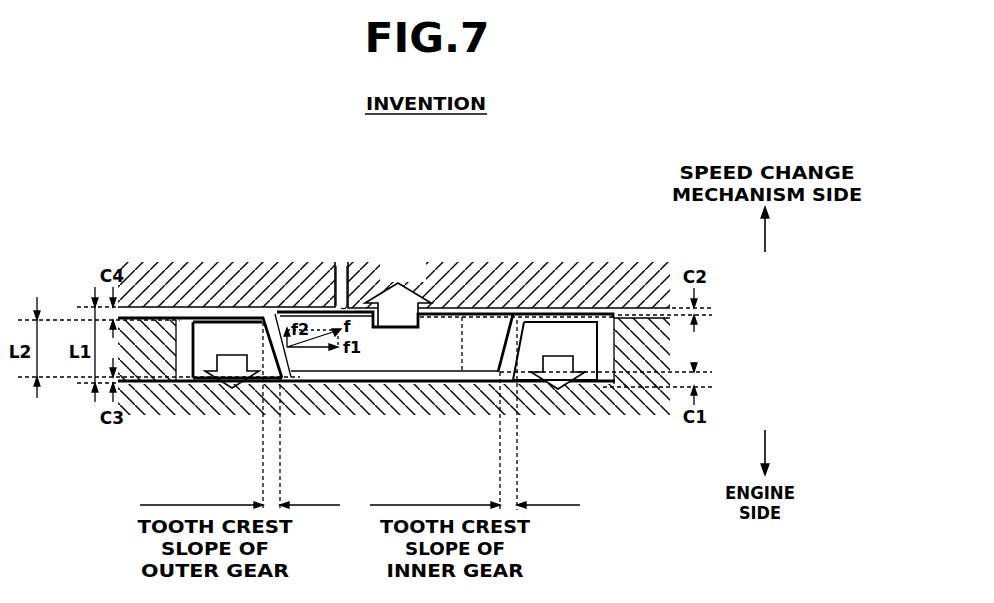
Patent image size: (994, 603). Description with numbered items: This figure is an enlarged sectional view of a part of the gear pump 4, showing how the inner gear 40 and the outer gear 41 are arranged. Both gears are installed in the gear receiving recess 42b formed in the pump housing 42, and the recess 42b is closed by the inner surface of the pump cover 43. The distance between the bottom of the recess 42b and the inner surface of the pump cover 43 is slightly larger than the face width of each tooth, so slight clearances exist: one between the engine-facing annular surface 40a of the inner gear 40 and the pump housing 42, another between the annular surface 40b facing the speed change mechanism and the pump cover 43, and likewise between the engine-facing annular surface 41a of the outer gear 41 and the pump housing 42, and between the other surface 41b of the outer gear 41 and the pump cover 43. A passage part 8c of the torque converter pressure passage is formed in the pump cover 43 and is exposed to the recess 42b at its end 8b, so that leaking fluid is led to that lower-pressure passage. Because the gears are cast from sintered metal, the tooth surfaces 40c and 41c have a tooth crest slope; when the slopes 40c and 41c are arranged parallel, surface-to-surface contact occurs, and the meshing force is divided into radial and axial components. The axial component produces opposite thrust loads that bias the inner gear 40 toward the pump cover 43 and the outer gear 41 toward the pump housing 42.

The gear pump 4 is at (622, 201).
The end of passage part 8b is at (350, 307).
The passage part 8c is at (334, 268).
The inner gear 40 is at (479, 313).
The annular surface of inner gear 40a is at (313, 383).
The annular surface of inner gear 40b is at (492, 326).
The tooth surface of inner gear 40c is at (270, 311).
The outer gear 41 is at (574, 338).
The annular surface of outer gear 41a is at (528, 388).
The surface of outer gear 41b is at (542, 321).
The tooth surface of outer gear 41c is at (283, 381).
The pump housing 42 is at (642, 407).
The gear receiving recess 42b is at (183, 383).
The pump cover 43 is at (172, 290).